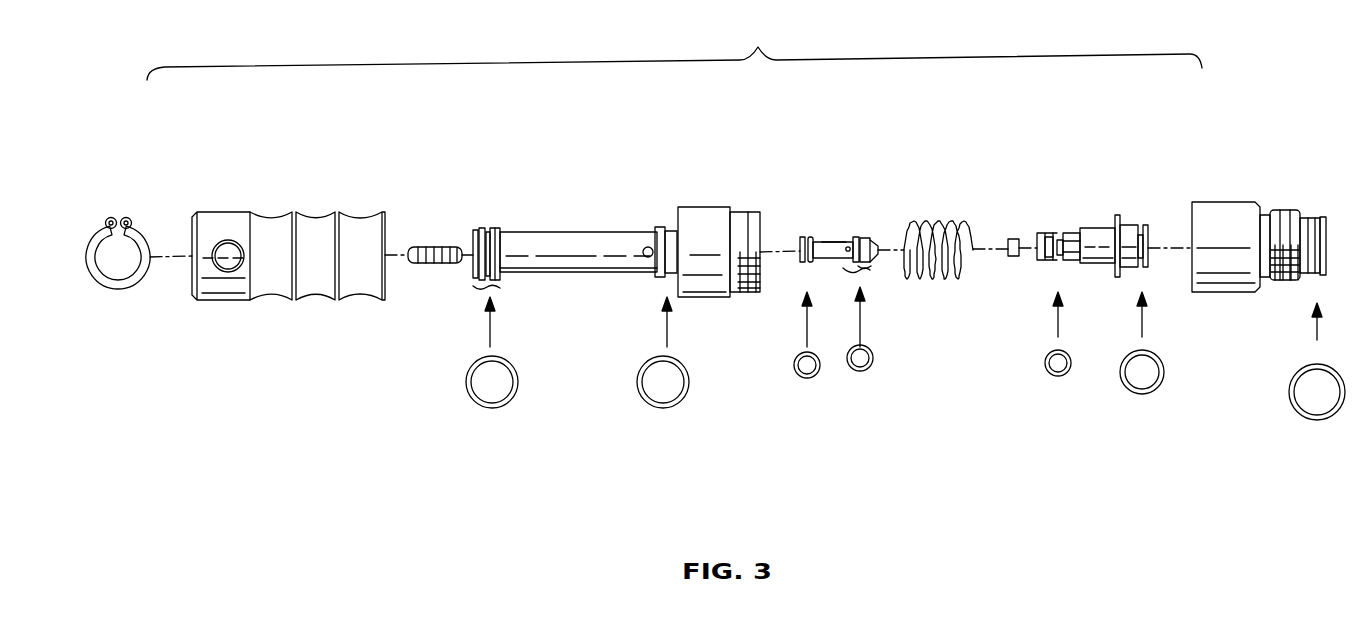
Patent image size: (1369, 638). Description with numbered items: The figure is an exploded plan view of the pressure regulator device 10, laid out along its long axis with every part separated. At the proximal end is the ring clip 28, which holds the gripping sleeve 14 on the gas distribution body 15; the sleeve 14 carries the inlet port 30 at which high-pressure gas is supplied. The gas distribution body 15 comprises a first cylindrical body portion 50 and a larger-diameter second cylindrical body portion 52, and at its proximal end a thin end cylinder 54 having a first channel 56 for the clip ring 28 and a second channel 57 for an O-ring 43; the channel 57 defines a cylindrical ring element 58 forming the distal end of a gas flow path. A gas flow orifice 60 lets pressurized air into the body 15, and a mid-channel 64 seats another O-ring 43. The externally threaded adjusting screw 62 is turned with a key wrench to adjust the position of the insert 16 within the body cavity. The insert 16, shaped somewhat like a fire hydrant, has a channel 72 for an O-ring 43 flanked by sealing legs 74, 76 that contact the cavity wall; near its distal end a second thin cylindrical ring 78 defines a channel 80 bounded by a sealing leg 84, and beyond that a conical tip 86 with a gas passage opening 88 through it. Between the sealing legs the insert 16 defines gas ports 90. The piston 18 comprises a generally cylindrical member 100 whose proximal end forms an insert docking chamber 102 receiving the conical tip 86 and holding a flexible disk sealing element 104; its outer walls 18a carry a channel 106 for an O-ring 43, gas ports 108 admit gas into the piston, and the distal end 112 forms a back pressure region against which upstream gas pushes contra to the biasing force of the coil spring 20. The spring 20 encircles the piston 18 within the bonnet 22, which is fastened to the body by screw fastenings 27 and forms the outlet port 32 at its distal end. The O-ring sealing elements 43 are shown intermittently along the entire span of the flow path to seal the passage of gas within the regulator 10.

The pressure regulator device 10 is at (674, 48).
The gripping sleeve 14 is at (265, 212).
The gas distribution body 15 is at (600, 232).
The insert 16 is at (836, 241).
The piston 18 is at (1068, 233).
The outer walls of piston 18a is at (1096, 228).
The coil spring 20 is at (950, 222).
The bonnet 22 is at (1228, 203).
The screw fastenings 27 is at (745, 213).
The ring clip 28 is at (140, 230).
The inlet port 30 is at (228, 272).
The outlet port 32 is at (1324, 228).
The O-ring sealing elements 43 is at (515, 395).
The first cylindrical body portion 50 is at (572, 267).
The second cylindrical body portion 52 is at (704, 212).
The thin end cylinder 54 is at (497, 293).
The first channel 56 is at (476, 283).
The second channel 57 is at (488, 230).
The cylindrical ring element 58 is at (497, 229).
The gas flow orifice 60 is at (648, 246).
The adjusting screw 62 is at (434, 247).
The mid-channel 64 is at (663, 280).
The channel 72 is at (811, 237).
The sealing leg 74 is at (803, 237).
The sealing leg 76 is at (833, 241).
The second thin cylindrical ring 78 is at (855, 270).
The channel 80 is at (858, 237).
The sealing leg 84 is at (880, 262).
The conical tip 86 is at (871, 240).
The gas passage opening 88 is at (877, 256).
The gas port 90 is at (846, 251).
The generally cylindrical member 100 is at (1128, 225).
The insert docking chamber 102 is at (1038, 252).
The sealing element 104 is at (1015, 239).
The channel 106 is at (1061, 258).
The gas port 108 is at (1052, 259).
The distal end of piston 112 is at (1147, 268).